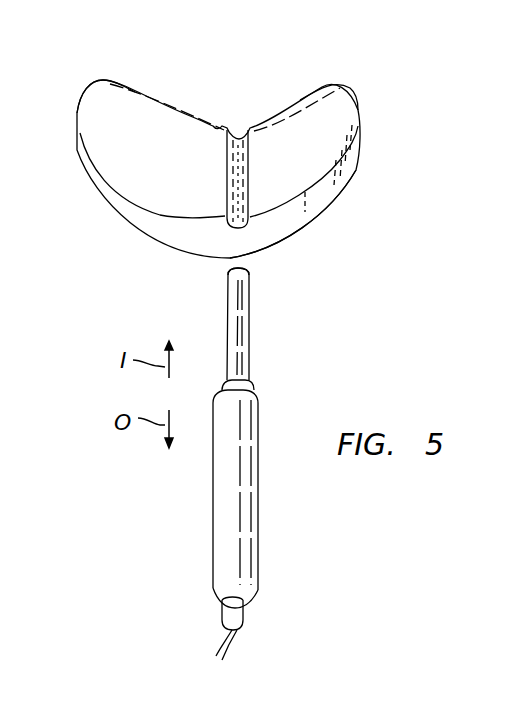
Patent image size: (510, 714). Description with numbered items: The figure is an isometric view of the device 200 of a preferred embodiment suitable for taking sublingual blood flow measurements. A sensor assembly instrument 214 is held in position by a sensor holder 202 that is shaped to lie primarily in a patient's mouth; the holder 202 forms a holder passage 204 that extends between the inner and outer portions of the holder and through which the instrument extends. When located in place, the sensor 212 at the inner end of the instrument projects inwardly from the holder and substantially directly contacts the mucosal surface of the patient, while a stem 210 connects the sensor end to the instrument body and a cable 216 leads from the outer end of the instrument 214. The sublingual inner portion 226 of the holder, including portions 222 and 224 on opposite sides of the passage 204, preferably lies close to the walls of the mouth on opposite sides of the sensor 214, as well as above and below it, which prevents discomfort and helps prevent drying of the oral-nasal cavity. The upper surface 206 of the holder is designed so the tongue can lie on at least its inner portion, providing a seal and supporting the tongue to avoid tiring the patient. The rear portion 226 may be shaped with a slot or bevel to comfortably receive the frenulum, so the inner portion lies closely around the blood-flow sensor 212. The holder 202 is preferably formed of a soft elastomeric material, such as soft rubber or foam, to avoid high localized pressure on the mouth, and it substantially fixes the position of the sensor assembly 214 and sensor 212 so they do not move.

The cushion assembly 200 is at (389, 133).
The sensor holder 202 is at (347, 183).
The holder passage 204 is at (242, 140).
The upper surface 206 is at (186, 171).
The stem 210 is at (252, 320).
The sensor 212 is at (240, 263).
The sensor assembly instrument 214 is at (257, 542).
The cable 216 is at (233, 643).
The portion of the sublingual inner portion 222 is at (107, 80).
The portion of the sublingual inner portion 224 is at (330, 88).
The sublingual inner portion 226 is at (177, 120).